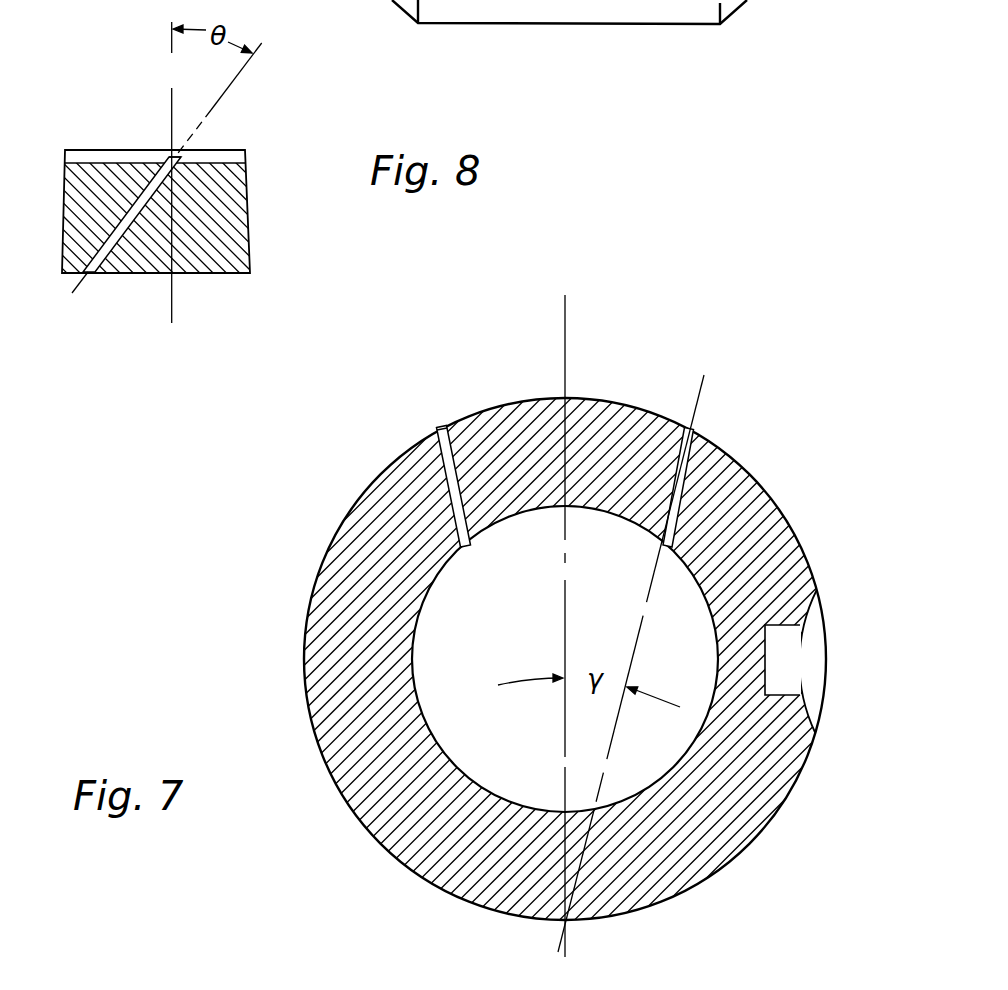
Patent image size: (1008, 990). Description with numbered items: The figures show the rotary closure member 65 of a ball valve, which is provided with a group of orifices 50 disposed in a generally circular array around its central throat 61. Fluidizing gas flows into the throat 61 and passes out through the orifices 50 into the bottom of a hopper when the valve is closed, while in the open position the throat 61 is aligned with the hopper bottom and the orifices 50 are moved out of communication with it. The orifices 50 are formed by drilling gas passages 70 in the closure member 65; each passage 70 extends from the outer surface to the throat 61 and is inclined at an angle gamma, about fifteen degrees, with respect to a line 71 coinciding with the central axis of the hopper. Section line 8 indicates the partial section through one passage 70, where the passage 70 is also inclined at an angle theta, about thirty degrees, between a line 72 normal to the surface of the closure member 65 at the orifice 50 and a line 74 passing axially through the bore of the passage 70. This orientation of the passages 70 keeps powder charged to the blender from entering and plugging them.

In FIG. 8, the rotary closure member 65 is at (110, 150).
In FIG. 7, the rotary closure member 65 is at (504, 660).
In FIG. 8, the gas passage 70 is at (140, 210).
In FIG. 7, the gas passage 70 is at (447, 488).
In FIG. 8, the orifice 50 is at (173, 158).
In FIG. 7, the orifice 50 is at (443, 430).
In FIG. 7, the throat 61 is at (505, 621).
In FIG. 7, the line coinciding with the central axis of the hopper 71 is at (568, 325).
In FIG. 8, the normal line 72 is at (171, 43).
In FIG. 8, the line passing axially through the bore of the gas passage 74 is at (243, 70).
In FIG. 7, the section line 8- 8 is at (703, 377).